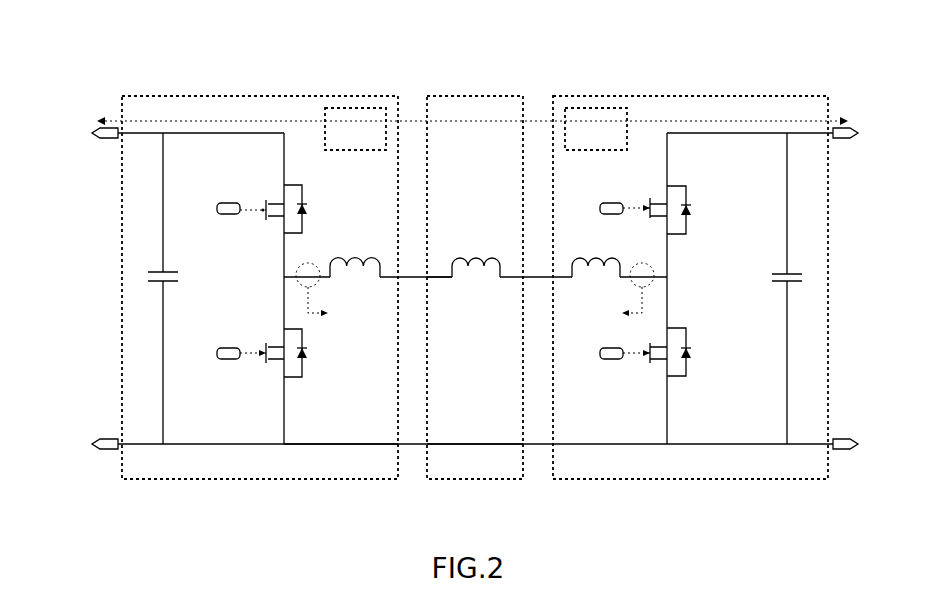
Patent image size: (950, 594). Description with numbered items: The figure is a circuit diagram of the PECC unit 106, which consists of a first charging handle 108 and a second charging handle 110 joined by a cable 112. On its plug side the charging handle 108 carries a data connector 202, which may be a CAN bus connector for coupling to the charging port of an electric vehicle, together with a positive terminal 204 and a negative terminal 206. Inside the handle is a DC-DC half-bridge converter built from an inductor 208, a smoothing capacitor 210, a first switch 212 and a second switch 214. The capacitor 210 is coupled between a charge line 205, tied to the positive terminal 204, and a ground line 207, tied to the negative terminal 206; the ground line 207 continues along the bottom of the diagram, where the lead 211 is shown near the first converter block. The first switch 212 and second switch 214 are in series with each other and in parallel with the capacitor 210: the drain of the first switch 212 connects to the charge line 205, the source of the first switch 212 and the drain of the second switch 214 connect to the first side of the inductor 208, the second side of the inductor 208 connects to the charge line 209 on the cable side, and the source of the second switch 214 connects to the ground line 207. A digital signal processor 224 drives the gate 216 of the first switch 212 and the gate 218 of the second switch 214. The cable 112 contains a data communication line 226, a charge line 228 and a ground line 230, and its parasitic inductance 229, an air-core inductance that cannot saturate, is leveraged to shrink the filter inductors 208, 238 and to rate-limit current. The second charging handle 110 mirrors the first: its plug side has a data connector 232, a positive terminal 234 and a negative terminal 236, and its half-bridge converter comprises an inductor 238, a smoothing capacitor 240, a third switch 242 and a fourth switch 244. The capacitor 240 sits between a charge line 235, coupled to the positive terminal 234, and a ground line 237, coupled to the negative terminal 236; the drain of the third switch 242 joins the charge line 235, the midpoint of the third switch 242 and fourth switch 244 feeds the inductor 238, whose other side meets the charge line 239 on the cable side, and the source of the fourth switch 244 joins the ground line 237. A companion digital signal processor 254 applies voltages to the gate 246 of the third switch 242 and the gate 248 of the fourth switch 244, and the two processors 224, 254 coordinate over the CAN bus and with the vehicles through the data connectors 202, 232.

The PECC unit 106 is at (128, 42).
The charging handle 108 is at (172, 96).
The charging handle 110 is at (653, 97).
The cable 112 is at (445, 96).
The data connector 202 is at (97, 121).
The positive terminal 204 is at (113, 142).
The charge line 205 is at (147, 134).
The negative terminal 206 is at (100, 438).
The ground line 207 is at (143, 446).
The inductor 208 is at (358, 280).
The charge line 209 is at (390, 280).
The smoothing capacitor 210 is at (185, 290).
The negative rail 211 is at (388, 446).
The switch S1 212 is at (252, 183).
The switch S2 214 is at (252, 335).
The gate 216 is at (217, 209).
The gate 218 is at (217, 354).
The digital signal processor 224 is at (349, 108).
The data communication line 226 is at (455, 128).
The charge line 228 is at (500, 278).
The parasitic inductance 229 is at (490, 270).
The ground line 230 is at (462, 442).
The data connector 232 is at (847, 121).
The positive terminal 234 is at (850, 140).
The charge line 235 is at (812, 135).
The negative terminal 236 is at (843, 440).
The ground line 237 is at (803, 442).
The inductor 238 is at (575, 265).
The charge line 239 is at (567, 278).
The smoothing capacitor 240 is at (770, 280).
The switch S3 242 is at (718, 183).
The switch S4 244 is at (722, 327).
The gate 246 is at (608, 203).
The gate 248 is at (603, 360).
The digital signal processor 254 is at (591, 108).